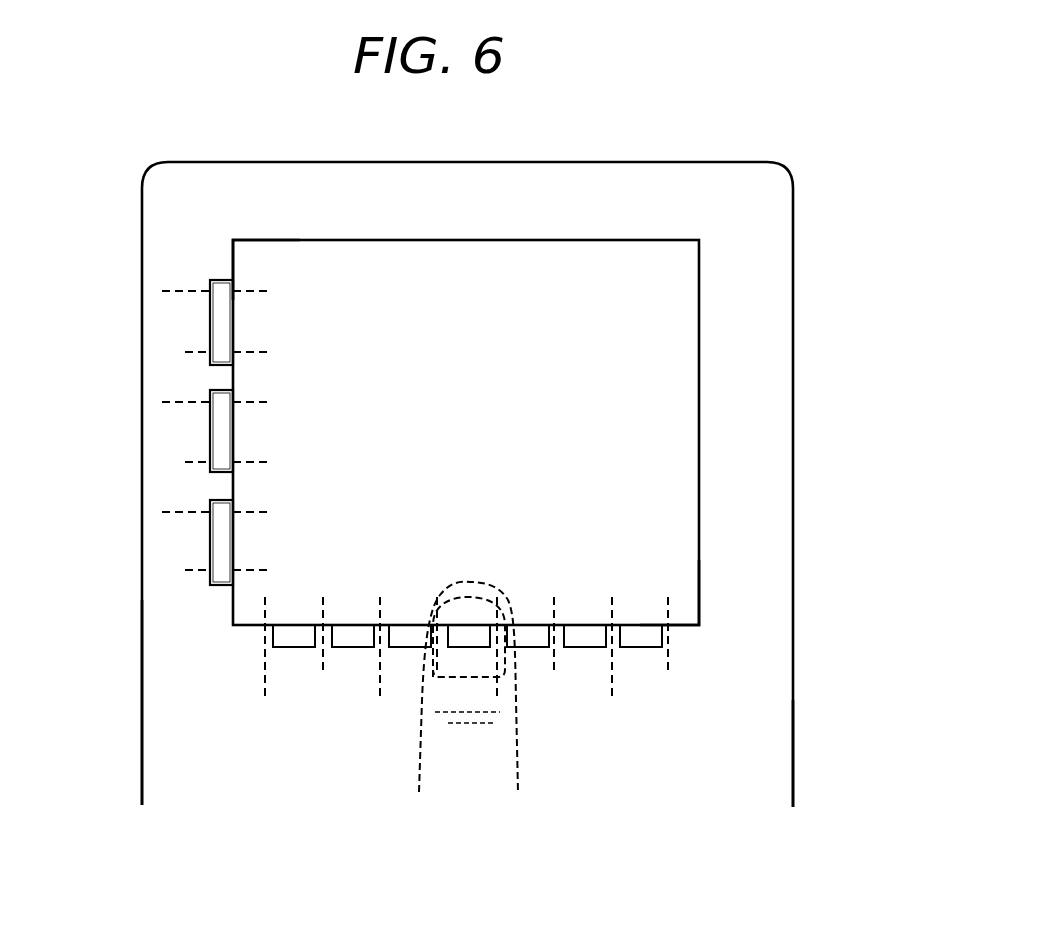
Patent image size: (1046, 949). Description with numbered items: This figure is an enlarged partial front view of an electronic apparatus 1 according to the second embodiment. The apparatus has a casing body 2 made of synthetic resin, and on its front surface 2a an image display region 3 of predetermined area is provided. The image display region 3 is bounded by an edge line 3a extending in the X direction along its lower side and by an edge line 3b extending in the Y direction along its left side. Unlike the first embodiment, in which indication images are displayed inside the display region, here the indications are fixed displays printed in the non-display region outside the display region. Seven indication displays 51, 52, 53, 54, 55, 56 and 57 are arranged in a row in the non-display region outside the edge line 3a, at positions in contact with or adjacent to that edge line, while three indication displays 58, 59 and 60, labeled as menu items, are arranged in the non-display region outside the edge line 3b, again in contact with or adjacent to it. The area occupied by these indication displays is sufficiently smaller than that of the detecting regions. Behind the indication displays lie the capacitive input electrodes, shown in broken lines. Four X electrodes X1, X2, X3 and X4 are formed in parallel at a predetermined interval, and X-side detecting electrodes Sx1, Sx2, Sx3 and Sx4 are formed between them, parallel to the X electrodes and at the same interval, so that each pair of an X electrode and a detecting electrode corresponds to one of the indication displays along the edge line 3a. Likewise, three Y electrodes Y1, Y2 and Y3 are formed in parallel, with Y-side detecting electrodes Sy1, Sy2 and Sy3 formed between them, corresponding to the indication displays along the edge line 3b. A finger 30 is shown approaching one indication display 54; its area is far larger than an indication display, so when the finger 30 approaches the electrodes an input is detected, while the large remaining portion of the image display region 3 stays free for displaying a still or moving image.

The electronic apparatus 1 is at (812, 333).
The casing body 2 is at (800, 689).
The front surface 2a is at (765, 745).
The image display region 3 is at (670, 390).
The edge line 3a is at (690, 621).
The edge line 3b is at (233, 264).
The finger 30 is at (518, 773).
The indication display 51 is at (291, 625).
The indication display 52 is at (347, 625).
The indication display 53 is at (405, 625).
The indication display 54 is at (463, 625).
The indication display 55 is at (522, 625).
The indication display 56 is at (580, 625).
The indication display 57 is at (637, 625).
The indication display 58 is at (233, 312).
The indication display 59 is at (233, 422).
The indication display 60 is at (233, 532).
The X electrode X1 is at (265, 668).
The X electrode X2 is at (380, 670).
The X electrode X3 is at (497, 668).
The X electrode X4 is at (612, 682).
The X-side detecting electrode Sx1 is at (323, 652).
The X-side detecting electrode Sx2 is at (437, 660).
The X-side detecting electrode Sx3 is at (554, 652).
The X-side detecting electrode Sx4 is at (668, 655).
The Y electrode Y1 is at (192, 291).
The Y electrode Y2 is at (192, 402).
The Y electrode Y3 is at (192, 512).
The Y-side detecting electrode Sy1 is at (195, 352).
The Y-side detecting electrode Sy2 is at (195, 462).
The Y-side detecting electrode Sy3 is at (195, 570).